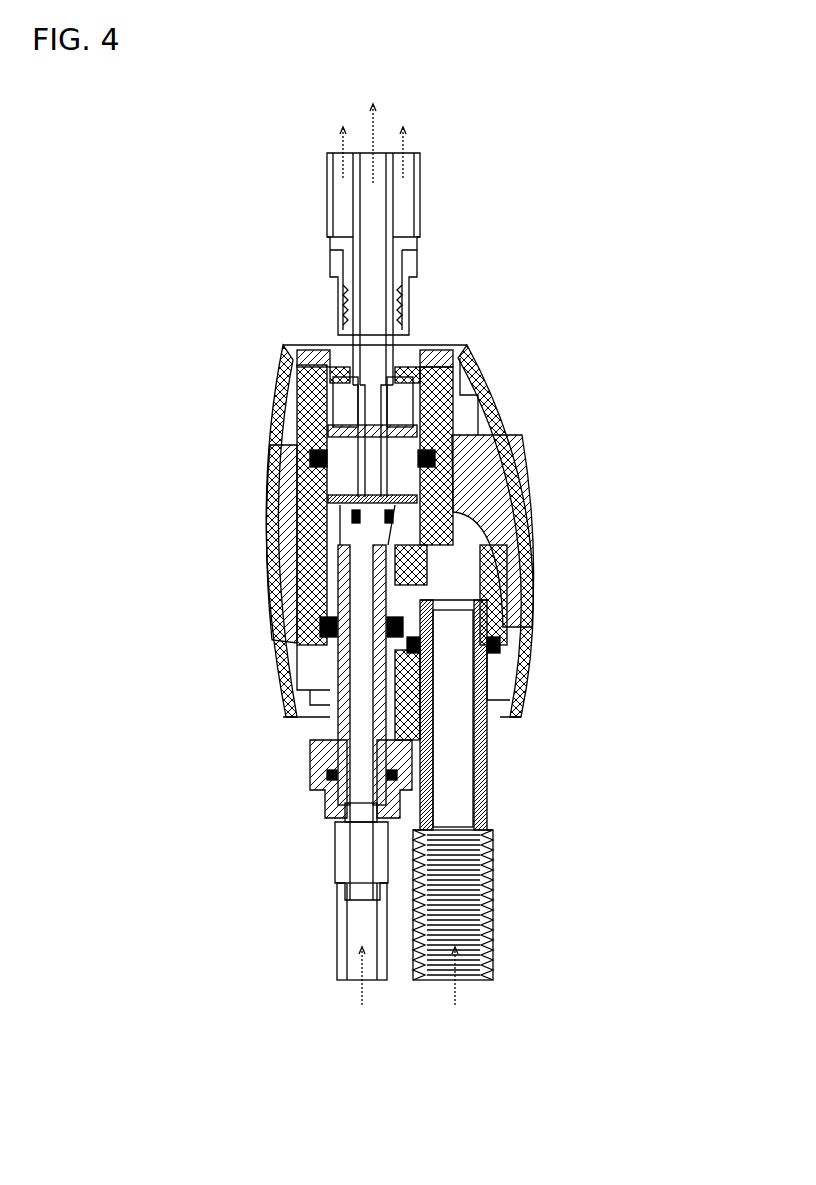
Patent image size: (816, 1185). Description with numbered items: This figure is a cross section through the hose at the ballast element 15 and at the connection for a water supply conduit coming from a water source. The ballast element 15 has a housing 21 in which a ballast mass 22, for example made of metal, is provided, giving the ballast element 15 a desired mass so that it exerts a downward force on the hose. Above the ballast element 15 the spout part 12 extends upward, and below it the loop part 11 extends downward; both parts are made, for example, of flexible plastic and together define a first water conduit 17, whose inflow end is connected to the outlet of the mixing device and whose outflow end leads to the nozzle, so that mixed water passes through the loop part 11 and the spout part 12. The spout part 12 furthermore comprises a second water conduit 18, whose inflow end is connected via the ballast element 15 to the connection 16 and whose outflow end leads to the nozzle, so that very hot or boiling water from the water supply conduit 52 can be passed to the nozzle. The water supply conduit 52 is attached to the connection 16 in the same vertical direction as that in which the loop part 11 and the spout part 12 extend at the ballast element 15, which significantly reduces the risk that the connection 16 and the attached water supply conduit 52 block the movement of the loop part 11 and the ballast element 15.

The loop part 11 is at (492, 948).
The spout part 12 is at (420, 185).
The ballast element 15 is at (220, 536).
The connection 16 is at (340, 852).
The first water conduit 17 is at (340, 202).
The second water conduit 18 is at (373, 233).
The housing 21 is at (497, 410).
The ballast mass 22 is at (503, 503).
The water supply conduit 52 is at (340, 920).